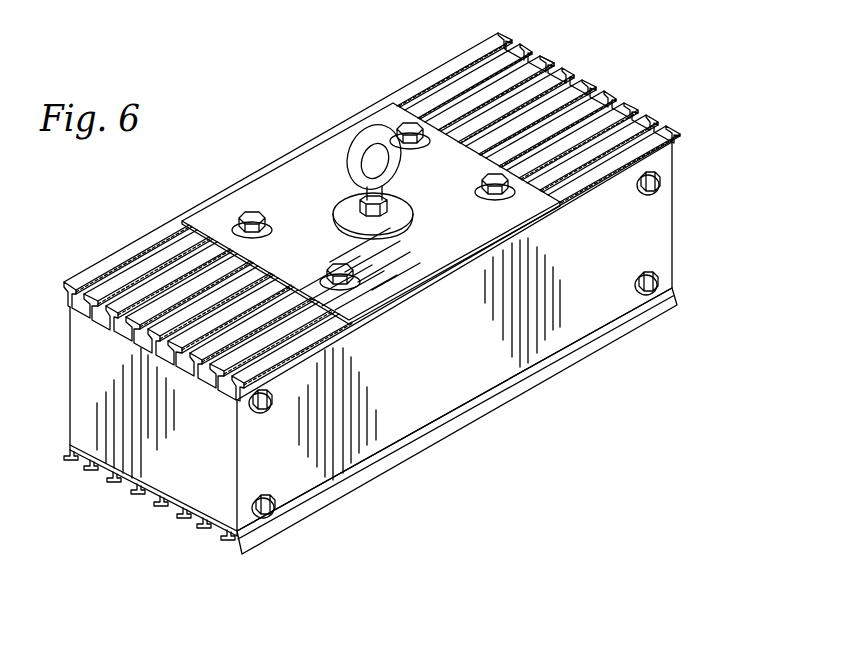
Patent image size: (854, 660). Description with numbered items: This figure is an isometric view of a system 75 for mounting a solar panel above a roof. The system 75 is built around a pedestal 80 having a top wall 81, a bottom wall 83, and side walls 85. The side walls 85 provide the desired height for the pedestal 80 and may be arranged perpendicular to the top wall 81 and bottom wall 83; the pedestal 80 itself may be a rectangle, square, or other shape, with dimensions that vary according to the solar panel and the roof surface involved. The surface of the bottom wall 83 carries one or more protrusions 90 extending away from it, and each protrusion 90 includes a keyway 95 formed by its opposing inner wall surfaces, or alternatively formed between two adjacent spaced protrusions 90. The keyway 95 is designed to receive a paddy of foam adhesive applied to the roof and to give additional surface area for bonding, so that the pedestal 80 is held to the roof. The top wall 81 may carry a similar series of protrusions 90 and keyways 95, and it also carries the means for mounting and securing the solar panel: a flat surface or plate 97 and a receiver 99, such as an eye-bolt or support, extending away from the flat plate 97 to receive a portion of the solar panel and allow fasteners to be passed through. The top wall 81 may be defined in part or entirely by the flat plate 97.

The system 75 is at (617, 88).
The pedestal 80 is at (682, 226).
The top wall 81 is at (553, 98).
The bottom wall 83 is at (383, 483).
The side wall 85 is at (540, 327).
The protrusion 90 is at (183, 536).
The keyway 95 is at (165, 511).
The flat surface or plate 97 is at (390, 268).
The receiver 99 is at (356, 147).